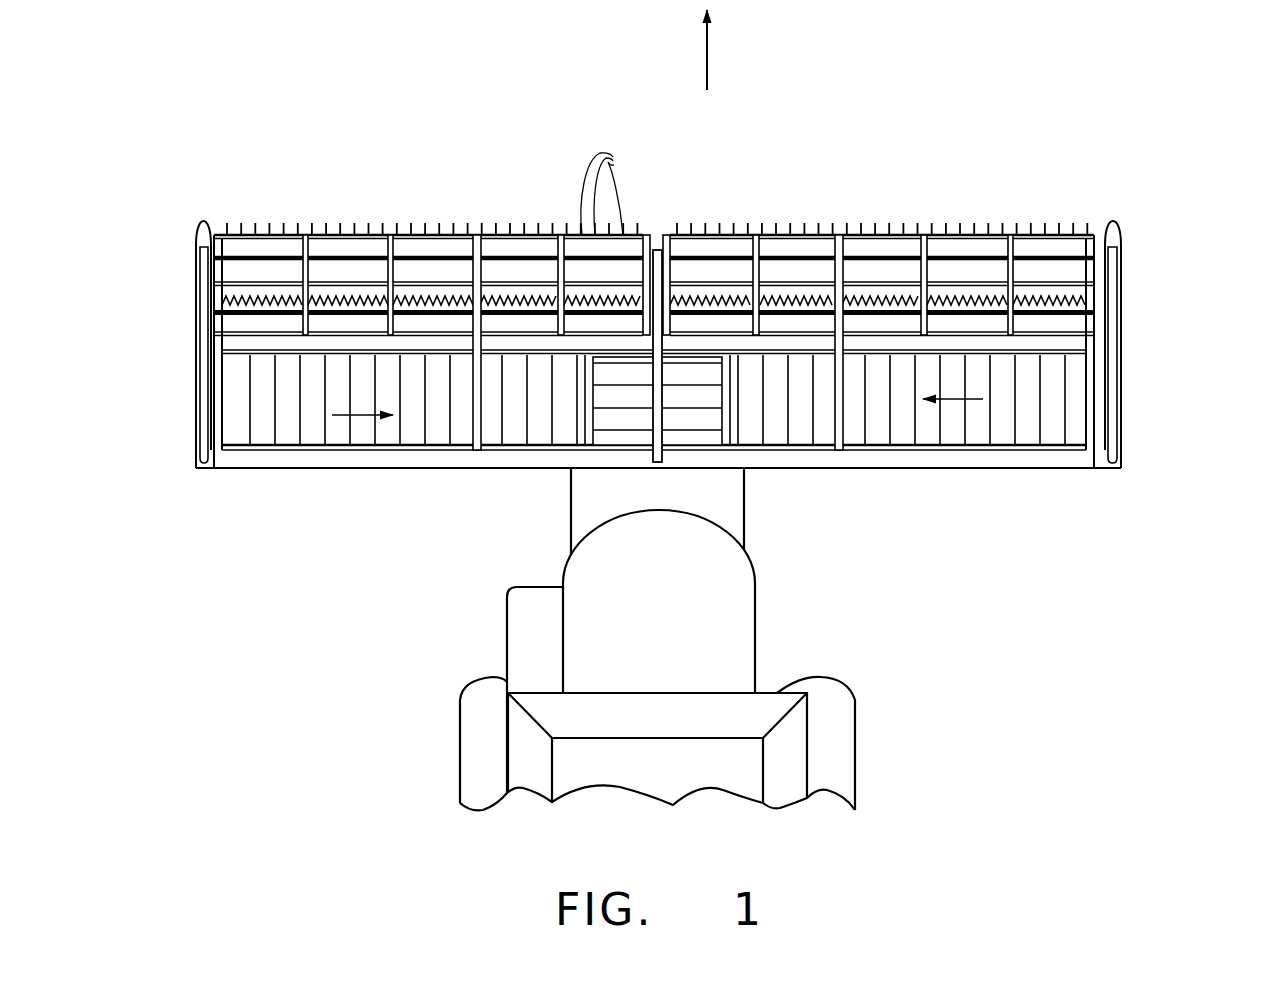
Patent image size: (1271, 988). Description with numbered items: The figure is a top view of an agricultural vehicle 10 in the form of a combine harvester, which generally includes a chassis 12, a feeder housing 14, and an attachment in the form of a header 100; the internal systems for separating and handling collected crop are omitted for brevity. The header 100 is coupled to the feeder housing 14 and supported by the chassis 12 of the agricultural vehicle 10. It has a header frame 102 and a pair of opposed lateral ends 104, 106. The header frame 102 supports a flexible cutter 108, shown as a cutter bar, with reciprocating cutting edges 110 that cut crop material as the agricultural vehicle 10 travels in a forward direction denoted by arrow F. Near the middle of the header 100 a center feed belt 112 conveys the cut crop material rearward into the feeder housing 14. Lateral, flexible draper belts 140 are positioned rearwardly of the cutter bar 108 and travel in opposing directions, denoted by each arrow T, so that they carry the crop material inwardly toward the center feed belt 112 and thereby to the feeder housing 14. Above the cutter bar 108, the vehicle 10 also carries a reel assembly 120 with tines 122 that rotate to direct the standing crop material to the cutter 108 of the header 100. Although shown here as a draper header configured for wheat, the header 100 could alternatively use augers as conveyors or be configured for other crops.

The agricultural vehicle 10 is at (692, 639).
The chassis 12 is at (757, 620).
The feeder housing 14 is at (744, 500).
The header 100 is at (652, 333).
The header frame 102 is at (495, 472).
The lateral end 104 is at (1142, 404).
The lateral end 106 is at (182, 415).
The flexible cutter 108 is at (613, 235).
The reciprocating cutting edges 110 is at (248, 294).
The center feed belt 112 is at (688, 378).
The reel assembly 120 is at (657, 155).
The tines 122 is at (620, 190).
The draper belts 140 is at (420, 420).
The forward direction F is at (708, 62).
The direction of travel T is at (363, 418).